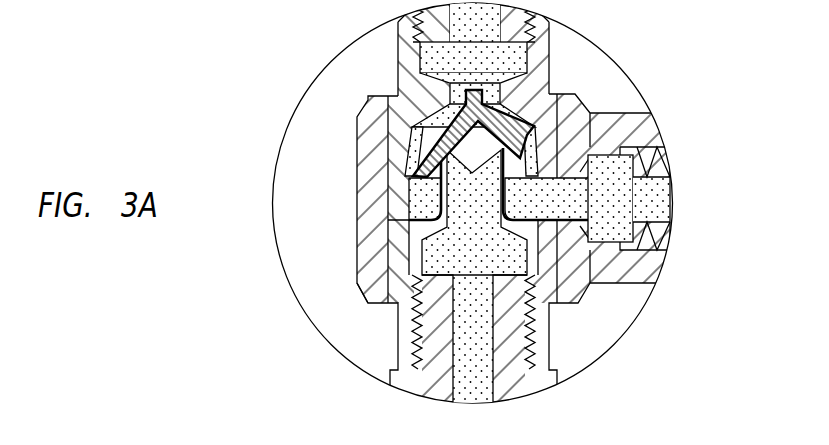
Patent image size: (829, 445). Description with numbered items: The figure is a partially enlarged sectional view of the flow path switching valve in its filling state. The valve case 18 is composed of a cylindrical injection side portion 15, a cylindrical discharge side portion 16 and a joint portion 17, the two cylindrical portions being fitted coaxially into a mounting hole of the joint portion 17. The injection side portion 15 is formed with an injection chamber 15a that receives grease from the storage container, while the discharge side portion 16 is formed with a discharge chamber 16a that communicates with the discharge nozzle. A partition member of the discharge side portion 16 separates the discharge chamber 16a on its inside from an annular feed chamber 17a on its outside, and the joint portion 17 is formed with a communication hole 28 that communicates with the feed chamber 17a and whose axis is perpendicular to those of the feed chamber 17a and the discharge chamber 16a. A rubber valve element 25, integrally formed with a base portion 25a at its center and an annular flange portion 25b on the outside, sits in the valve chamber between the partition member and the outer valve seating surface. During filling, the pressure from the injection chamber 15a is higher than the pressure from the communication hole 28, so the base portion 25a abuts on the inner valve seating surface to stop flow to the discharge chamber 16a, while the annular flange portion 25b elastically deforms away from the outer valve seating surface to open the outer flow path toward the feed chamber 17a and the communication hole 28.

The cylindrical injection side portion 15 is at (532, 90).
The injection chamber 15a is at (485, 57).
The cylindrical discharge side portion 16 is at (540, 345).
The discharge chamber 16a is at (467, 257).
The joint portion 17 is at (377, 200).
The annular feed chamber 17a is at (423, 192).
The valve case 18 is at (371, 324).
The valve element 25 is at (376, 125).
The base portion 25a is at (460, 138).
The annular flange portion 25b is at (411, 173).
The communication hole 28 is at (607, 198).